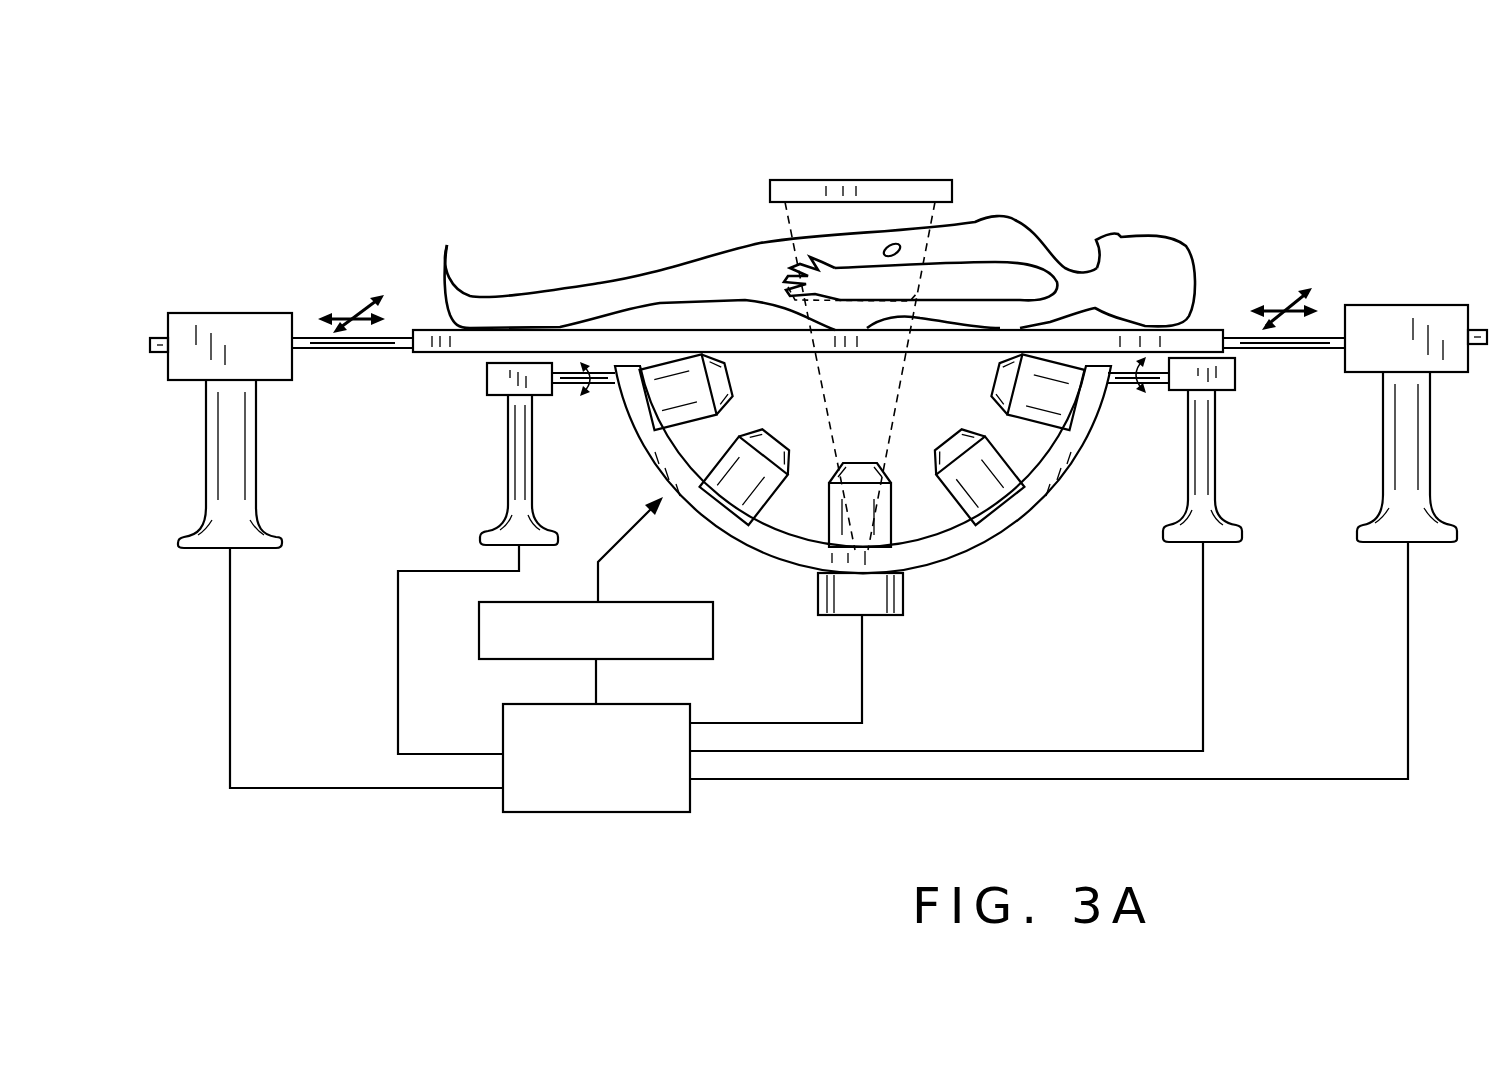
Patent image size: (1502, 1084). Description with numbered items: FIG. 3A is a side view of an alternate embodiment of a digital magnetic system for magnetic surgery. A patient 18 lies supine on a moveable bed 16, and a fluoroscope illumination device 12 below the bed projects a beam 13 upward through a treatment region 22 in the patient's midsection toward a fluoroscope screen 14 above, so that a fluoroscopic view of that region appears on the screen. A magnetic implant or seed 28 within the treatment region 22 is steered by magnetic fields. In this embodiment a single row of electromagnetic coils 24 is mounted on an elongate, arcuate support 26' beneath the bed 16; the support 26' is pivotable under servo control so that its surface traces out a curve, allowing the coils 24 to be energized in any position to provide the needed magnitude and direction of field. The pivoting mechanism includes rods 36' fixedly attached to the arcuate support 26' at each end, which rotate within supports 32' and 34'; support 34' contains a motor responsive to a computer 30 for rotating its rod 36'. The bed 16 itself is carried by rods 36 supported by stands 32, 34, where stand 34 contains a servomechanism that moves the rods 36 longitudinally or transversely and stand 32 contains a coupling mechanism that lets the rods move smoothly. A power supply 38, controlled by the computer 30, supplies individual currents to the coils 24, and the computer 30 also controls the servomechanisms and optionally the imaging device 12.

The fluoroscope illumination device 12 is at (903, 585).
The beam 13 is at (903, 455).
The fluoroscope screen 14 is at (905, 180).
The moveable bed 16 is at (1205, 327).
The patient 18 is at (1027, 238).
The treatment region 22 is at (780, 258).
The electromagnetic coils 24 is at (757, 433).
The arcuate support 26' is at (864, 469).
The seed 28 is at (899, 247).
The computer 30 is at (665, 812).
The stand 32 is at (241, 399).
The support 32' is at (503, 454).
The stand 34 is at (1416, 397).
The support 34' is at (1232, 450).
The rods 36 is at (818, 371).
The rods 36' is at (860, 412).
The power supply 38 is at (715, 630).